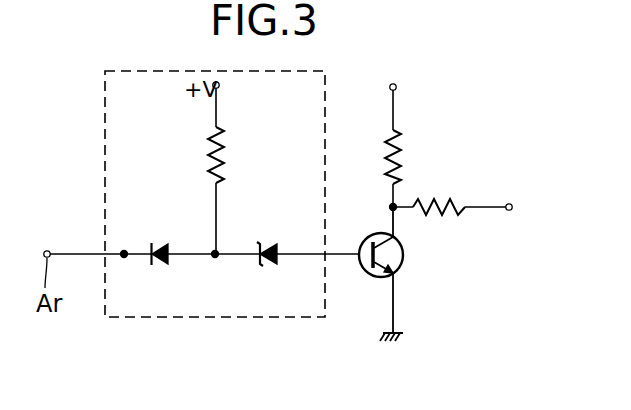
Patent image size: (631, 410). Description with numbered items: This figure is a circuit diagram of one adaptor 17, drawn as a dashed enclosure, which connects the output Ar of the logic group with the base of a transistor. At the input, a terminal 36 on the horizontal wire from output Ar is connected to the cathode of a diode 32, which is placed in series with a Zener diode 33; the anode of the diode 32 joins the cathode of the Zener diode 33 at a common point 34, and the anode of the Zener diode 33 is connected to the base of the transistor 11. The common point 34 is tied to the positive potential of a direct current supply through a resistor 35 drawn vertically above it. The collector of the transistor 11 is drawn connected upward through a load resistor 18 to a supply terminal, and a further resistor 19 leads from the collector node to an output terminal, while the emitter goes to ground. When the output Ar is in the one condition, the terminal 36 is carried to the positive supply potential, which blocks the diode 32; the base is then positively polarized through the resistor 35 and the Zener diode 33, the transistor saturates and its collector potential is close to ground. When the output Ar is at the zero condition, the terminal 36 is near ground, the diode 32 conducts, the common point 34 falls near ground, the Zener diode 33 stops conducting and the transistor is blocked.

The transistor 11 is at (403, 262).
The adaptor 17 is at (105, 176).
The collector load resistor 18 is at (405, 160).
The output resistor 19 is at (465, 212).
The diode 32 is at (165, 262).
The Zener diode 33 is at (272, 262).
The common point 34 is at (216, 258).
The resistor 35 is at (227, 165).
The terminal 36 is at (124, 258).